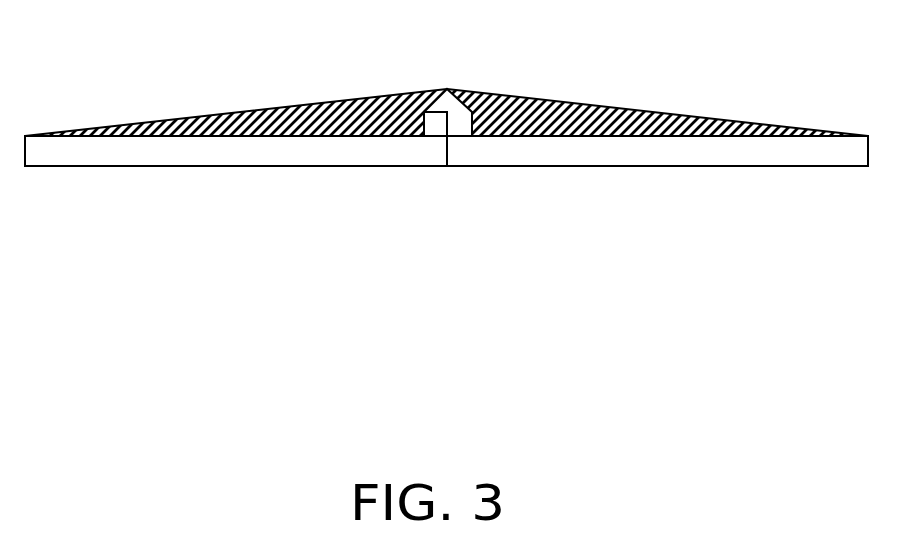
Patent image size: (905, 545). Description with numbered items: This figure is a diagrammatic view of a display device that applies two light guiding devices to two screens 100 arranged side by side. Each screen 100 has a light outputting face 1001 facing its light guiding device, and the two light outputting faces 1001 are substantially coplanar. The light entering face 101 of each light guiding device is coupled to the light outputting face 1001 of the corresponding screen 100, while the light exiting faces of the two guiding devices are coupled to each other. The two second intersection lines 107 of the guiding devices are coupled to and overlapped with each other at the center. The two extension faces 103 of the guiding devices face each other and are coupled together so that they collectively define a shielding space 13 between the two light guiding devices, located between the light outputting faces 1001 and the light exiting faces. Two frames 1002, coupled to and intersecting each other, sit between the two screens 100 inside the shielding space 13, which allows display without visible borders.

The screen 100 is at (285, 155).
The light entering face 101 is at (738, 121).
The extension face 103 is at (412, 145).
The second intersection line 107 is at (447, 90).
The shielding space 13 is at (476, 130).
The light outputting face 1001 is at (581, 148).
The frame 1002 is at (437, 127).